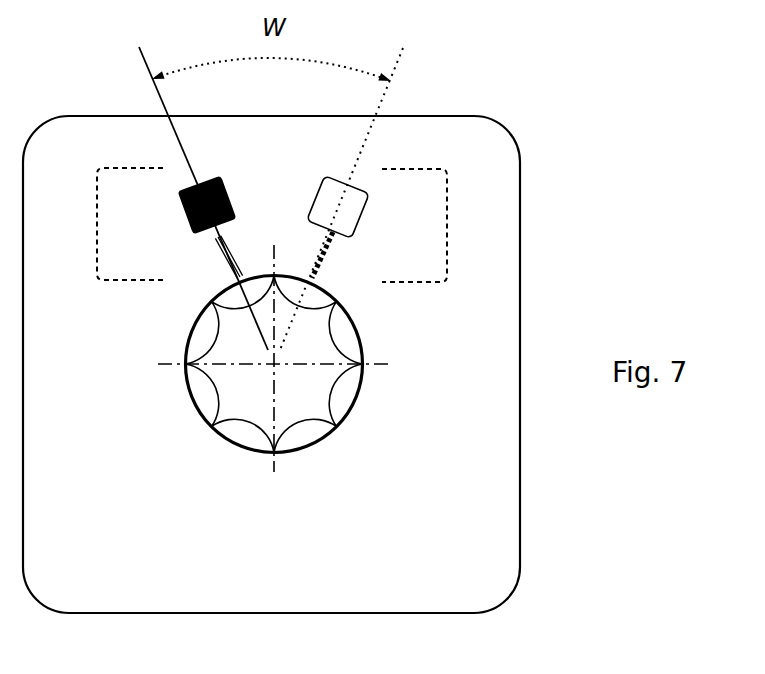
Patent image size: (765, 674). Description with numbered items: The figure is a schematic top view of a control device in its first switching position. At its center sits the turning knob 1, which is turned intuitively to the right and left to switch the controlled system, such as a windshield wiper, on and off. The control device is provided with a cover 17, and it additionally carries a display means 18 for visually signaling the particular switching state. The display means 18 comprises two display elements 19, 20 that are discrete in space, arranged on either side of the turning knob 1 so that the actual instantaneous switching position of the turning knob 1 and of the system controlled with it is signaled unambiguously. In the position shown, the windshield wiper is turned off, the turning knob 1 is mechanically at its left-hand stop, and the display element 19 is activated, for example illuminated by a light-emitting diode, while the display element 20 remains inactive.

The turning knob 1 is at (235, 407).
The cover 17 is at (486, 523).
The display means 18 is at (96, 229).
The display element 19 is at (189, 213).
The display element 20 is at (355, 214).